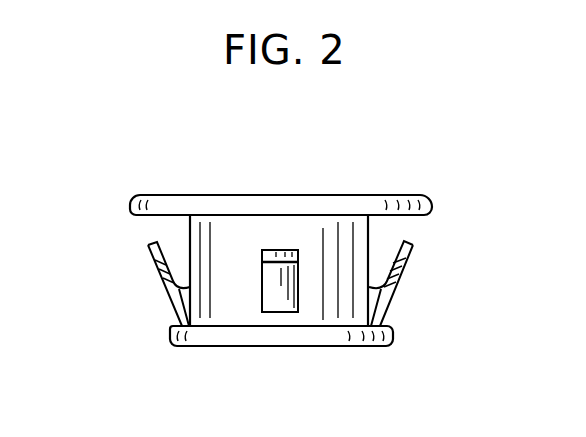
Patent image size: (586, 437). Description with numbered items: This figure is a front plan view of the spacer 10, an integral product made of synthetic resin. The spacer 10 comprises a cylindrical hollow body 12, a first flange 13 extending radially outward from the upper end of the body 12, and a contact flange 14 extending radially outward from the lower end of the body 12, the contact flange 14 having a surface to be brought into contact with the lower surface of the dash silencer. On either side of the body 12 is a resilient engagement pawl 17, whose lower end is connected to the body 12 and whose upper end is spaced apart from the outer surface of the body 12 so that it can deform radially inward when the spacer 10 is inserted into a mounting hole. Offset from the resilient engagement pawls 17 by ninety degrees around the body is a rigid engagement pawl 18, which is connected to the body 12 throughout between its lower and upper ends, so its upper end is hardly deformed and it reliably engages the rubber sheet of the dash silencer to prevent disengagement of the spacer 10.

The spacer 10 is at (340, 183).
The cylindrical hollow body 12 is at (232, 237).
The flange 13 is at (246, 203).
The contact flange 14 is at (315, 333).
The resilient engagement pawl 17 is at (410, 255).
The rigid engagement pawl 18 is at (272, 283).